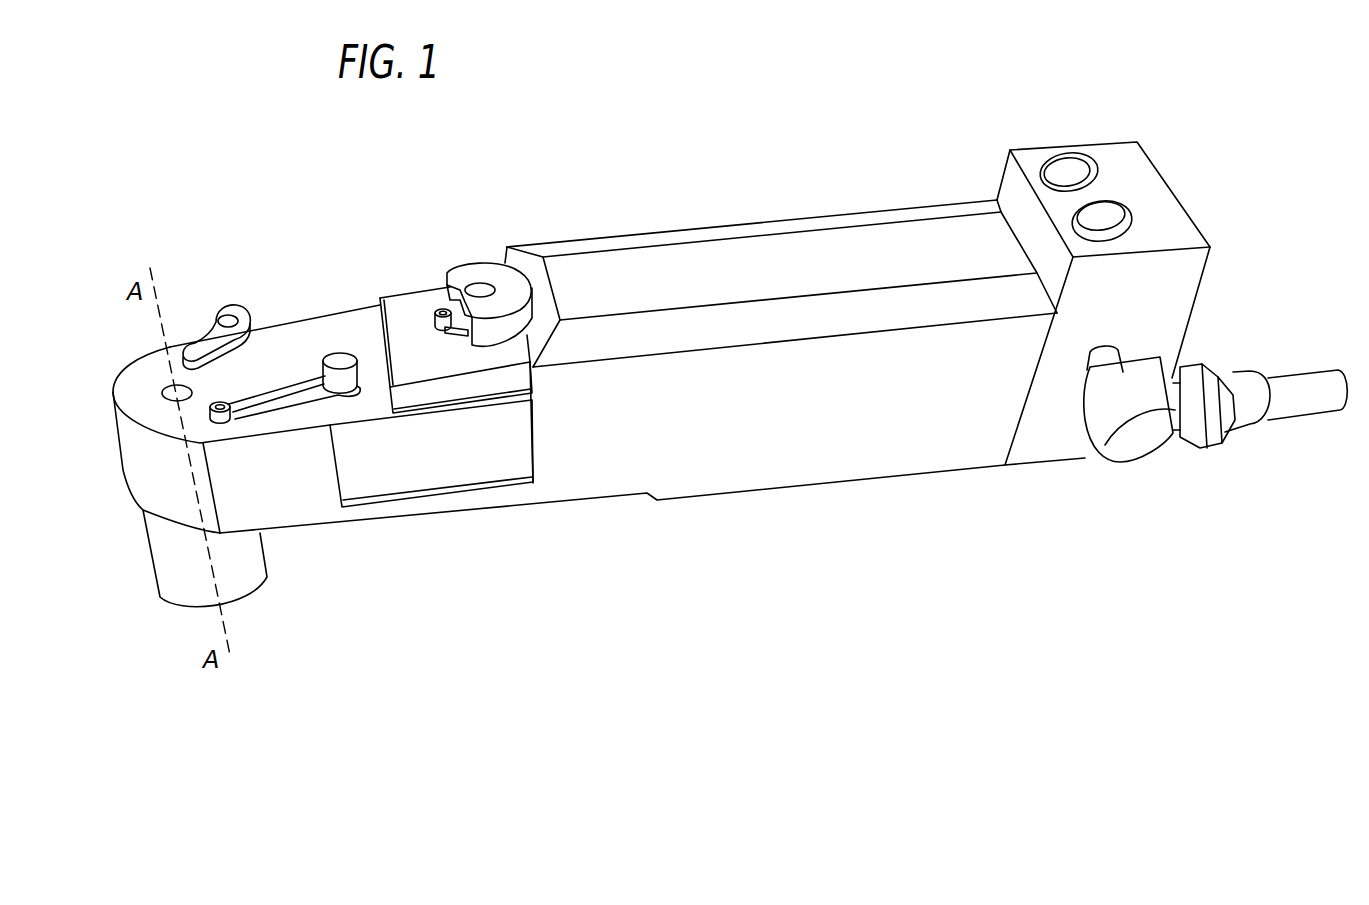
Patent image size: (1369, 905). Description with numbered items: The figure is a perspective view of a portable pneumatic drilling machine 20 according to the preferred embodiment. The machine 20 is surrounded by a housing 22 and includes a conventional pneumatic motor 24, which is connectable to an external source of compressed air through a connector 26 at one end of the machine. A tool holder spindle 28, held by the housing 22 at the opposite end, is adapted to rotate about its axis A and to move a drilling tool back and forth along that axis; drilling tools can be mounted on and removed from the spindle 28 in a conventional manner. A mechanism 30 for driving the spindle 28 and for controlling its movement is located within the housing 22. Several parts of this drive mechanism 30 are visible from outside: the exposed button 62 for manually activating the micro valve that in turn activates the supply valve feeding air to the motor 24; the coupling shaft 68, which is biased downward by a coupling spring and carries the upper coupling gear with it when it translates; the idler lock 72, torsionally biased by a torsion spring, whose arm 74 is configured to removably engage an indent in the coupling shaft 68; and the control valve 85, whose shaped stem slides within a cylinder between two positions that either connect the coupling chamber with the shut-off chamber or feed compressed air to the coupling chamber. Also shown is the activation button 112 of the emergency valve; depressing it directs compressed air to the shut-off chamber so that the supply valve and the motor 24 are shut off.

The pneumatic drilling machine 20 is at (758, 200).
The housing 22 is at (295, 515).
The pneumatic motor 24 is at (743, 412).
The connector 26 is at (1292, 400).
The tool holder spindle 28 is at (227, 570).
The mechanism 30 is at (437, 450).
The button 62 is at (1070, 167).
The coupling shaft 68 is at (440, 308).
The idler lock 72 is at (473, 273).
The arm 74 is at (462, 331).
The control valve 85 is at (226, 318).
The activation button 112 is at (1112, 216).